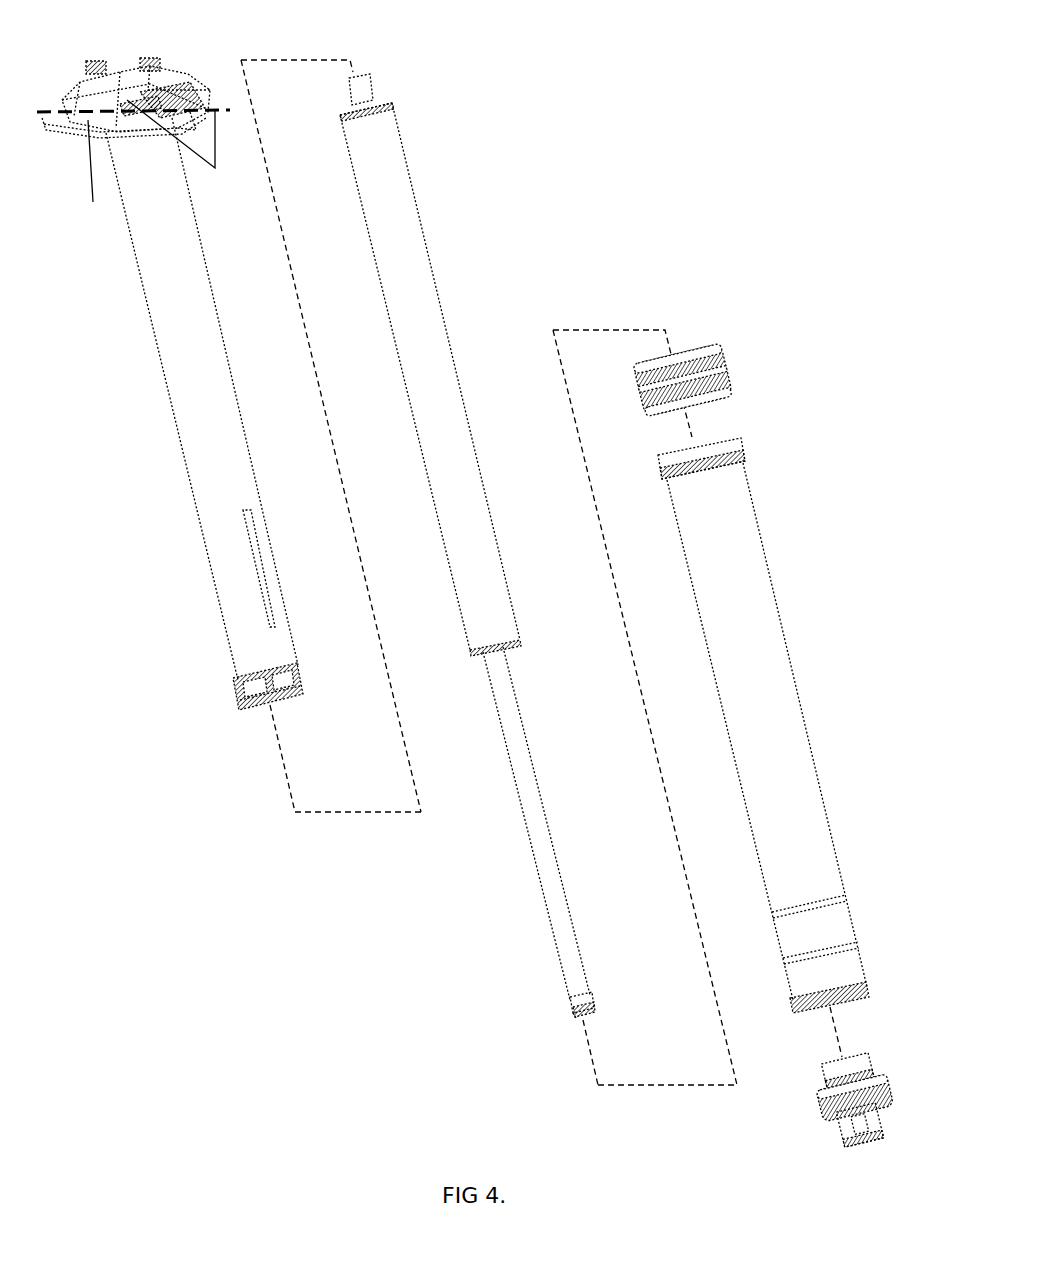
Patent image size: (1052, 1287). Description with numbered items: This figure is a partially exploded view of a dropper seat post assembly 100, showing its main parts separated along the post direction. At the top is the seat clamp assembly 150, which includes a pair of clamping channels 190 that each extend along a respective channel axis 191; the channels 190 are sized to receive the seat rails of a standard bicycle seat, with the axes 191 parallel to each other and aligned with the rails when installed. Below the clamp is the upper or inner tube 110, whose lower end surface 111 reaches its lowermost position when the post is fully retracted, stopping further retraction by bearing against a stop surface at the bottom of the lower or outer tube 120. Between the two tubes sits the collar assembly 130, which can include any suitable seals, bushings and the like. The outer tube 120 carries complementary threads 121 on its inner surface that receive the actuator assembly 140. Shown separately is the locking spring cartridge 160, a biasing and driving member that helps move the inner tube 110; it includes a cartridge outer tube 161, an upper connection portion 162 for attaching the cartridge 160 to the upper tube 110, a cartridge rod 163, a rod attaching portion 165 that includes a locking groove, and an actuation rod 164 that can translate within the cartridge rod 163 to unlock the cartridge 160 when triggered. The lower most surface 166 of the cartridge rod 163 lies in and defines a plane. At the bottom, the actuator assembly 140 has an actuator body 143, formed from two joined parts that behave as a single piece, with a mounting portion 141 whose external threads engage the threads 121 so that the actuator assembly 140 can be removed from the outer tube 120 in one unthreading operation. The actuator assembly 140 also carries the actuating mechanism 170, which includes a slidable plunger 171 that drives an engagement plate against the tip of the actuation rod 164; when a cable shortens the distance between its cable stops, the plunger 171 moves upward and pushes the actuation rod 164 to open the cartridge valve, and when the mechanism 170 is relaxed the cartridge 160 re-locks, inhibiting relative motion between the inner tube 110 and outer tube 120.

The seat post assembly 100 is at (712, 92).
The inner tube 110 is at (197, 270).
The lower end surface 111 is at (247, 713).
The outer tube 120 is at (767, 580).
The complementary threads 121 is at (822, 1005).
The collar assembly 130 is at (722, 368).
The actuator assembly 140 is at (895, 1065).
The mounting portion 141 is at (826, 1108).
The actuator body 143 is at (828, 1079).
The seat clamp assembly 150 is at (93, 202).
The locking spring cartridge 160 is at (533, 268).
The cartridge outer tube 161 is at (415, 178).
The upper connection portion 162 is at (373, 100).
The cartridge rod 163 is at (521, 707).
The actuation rod 164 is at (595, 1022).
The rod attaching portion 165 is at (587, 1000).
The lower most surface 166 is at (578, 1012).
The actuating mechanism 170 is at (843, 1160).
The slidable plunger 171 is at (875, 1140).
The clamping channels 190 is at (87, 175).
The channel axis 191 is at (175, 148).